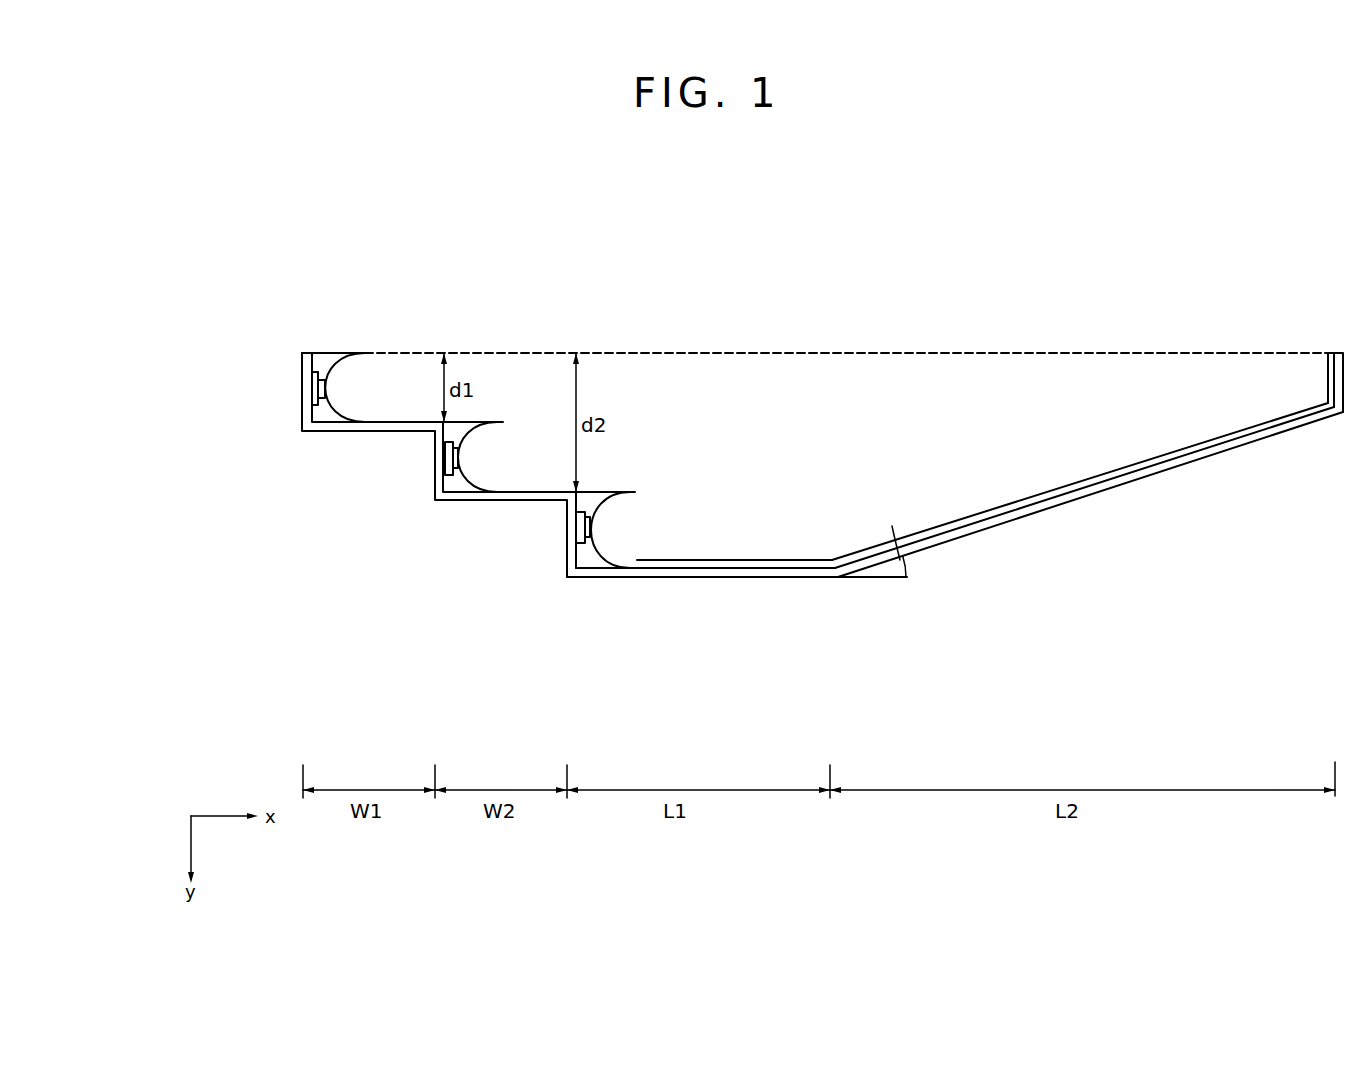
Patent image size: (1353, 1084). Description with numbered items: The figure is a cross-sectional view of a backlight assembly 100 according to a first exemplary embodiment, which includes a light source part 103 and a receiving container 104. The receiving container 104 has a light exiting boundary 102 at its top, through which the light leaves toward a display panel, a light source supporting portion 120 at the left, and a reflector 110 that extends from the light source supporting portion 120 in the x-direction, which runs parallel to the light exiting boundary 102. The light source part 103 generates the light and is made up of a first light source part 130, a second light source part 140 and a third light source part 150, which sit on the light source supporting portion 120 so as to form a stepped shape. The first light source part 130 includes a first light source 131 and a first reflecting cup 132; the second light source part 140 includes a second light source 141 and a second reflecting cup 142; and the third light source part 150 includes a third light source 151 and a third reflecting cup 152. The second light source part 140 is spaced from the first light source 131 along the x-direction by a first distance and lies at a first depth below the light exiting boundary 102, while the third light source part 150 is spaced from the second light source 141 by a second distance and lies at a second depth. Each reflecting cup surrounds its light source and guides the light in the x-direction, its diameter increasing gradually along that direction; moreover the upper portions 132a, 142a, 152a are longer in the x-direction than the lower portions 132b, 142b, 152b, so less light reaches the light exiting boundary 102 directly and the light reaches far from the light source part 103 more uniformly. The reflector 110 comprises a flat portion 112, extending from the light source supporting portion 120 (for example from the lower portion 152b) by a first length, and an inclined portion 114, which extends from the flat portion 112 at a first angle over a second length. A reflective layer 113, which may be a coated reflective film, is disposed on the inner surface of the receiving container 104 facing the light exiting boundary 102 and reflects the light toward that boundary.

The backlight assembly 100 is at (799, 252).
The light exiting boundary 102 is at (1178, 337).
The light source part 103 is at (80, 367).
The receiving container 104 is at (882, 688).
The reflector 110 is at (987, 652).
The flat portion 112 is at (757, 580).
The reflective layer 113 is at (1262, 430).
The inclined portion 114 is at (971, 542).
The light source supporting portion 120 is at (435, 458).
The first light source part 130 is at (126, 352).
The first light source 131 is at (308, 357).
The first reflecting cup 132 is at (174, 380).
The upper portion 132a is at (310, 386).
The lower portion 132b is at (312, 410).
The second light source part 140 is at (126, 442).
The second light source 141 is at (435, 432).
The second reflecting cup 142 is at (174, 470).
The upper portion 142a is at (445, 456).
The lower portion 142b is at (450, 483).
The third light source part 150 is at (126, 515).
The third light source 151 is at (567, 502).
The third reflecting cup 152 is at (174, 545).
The upper portion 152a is at (580, 529).
The lower portion 152b is at (583, 556).